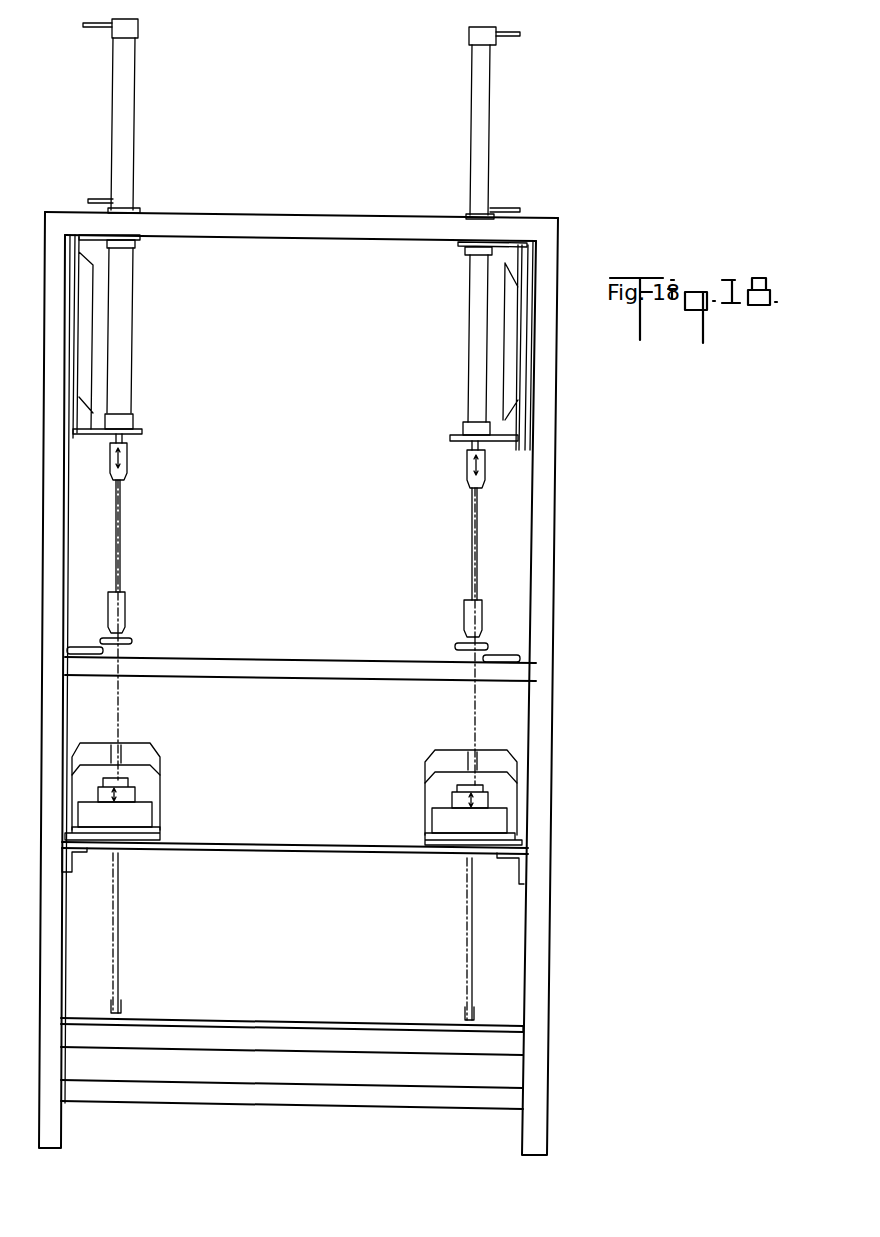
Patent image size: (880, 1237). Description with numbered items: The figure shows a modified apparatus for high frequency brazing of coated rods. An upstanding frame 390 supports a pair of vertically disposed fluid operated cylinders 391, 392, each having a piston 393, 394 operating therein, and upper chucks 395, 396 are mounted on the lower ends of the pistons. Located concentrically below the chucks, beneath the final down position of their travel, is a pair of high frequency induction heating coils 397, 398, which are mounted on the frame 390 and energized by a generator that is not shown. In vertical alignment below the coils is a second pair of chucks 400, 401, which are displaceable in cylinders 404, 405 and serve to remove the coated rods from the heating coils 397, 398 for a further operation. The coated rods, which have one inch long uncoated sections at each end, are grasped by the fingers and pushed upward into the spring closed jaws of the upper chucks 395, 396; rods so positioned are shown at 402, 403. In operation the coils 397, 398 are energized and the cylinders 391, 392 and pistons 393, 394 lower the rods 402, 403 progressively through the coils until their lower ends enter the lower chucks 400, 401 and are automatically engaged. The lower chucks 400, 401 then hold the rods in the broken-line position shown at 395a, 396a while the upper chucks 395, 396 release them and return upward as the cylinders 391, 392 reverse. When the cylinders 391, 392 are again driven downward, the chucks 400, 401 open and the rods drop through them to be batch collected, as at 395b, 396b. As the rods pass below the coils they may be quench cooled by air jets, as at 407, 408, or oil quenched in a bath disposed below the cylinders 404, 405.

The upstanding frame 390 is at (556, 612).
The fluid operated cylinder 391 is at (123, 108).
The fluid operated cylinder 392 is at (480, 92).
The piston 393 is at (123, 438).
The piston 394 is at (470, 447).
The chuck 395 is at (127, 465).
The chuck 396 is at (467, 470).
The rod position in lower chuck 395a is at (117, 707).
The rod position in lower chuck 396a is at (467, 703).
The batch collection position 395b is at (118, 923).
The batch collection position 396b is at (470, 905).
The high frequency induction heating coil 397 is at (130, 640).
The high frequency induction heating coil 398 is at (460, 644).
The lower chuck 400 is at (128, 792).
The lower chuck 401 is at (452, 797).
The coated rod 402 is at (122, 538).
The coated rod 403 is at (472, 527).
The cylinder 404 is at (137, 815).
The cylinder 405 is at (445, 820).
The air jet 407 is at (80, 647).
The air jet 408 is at (503, 654).